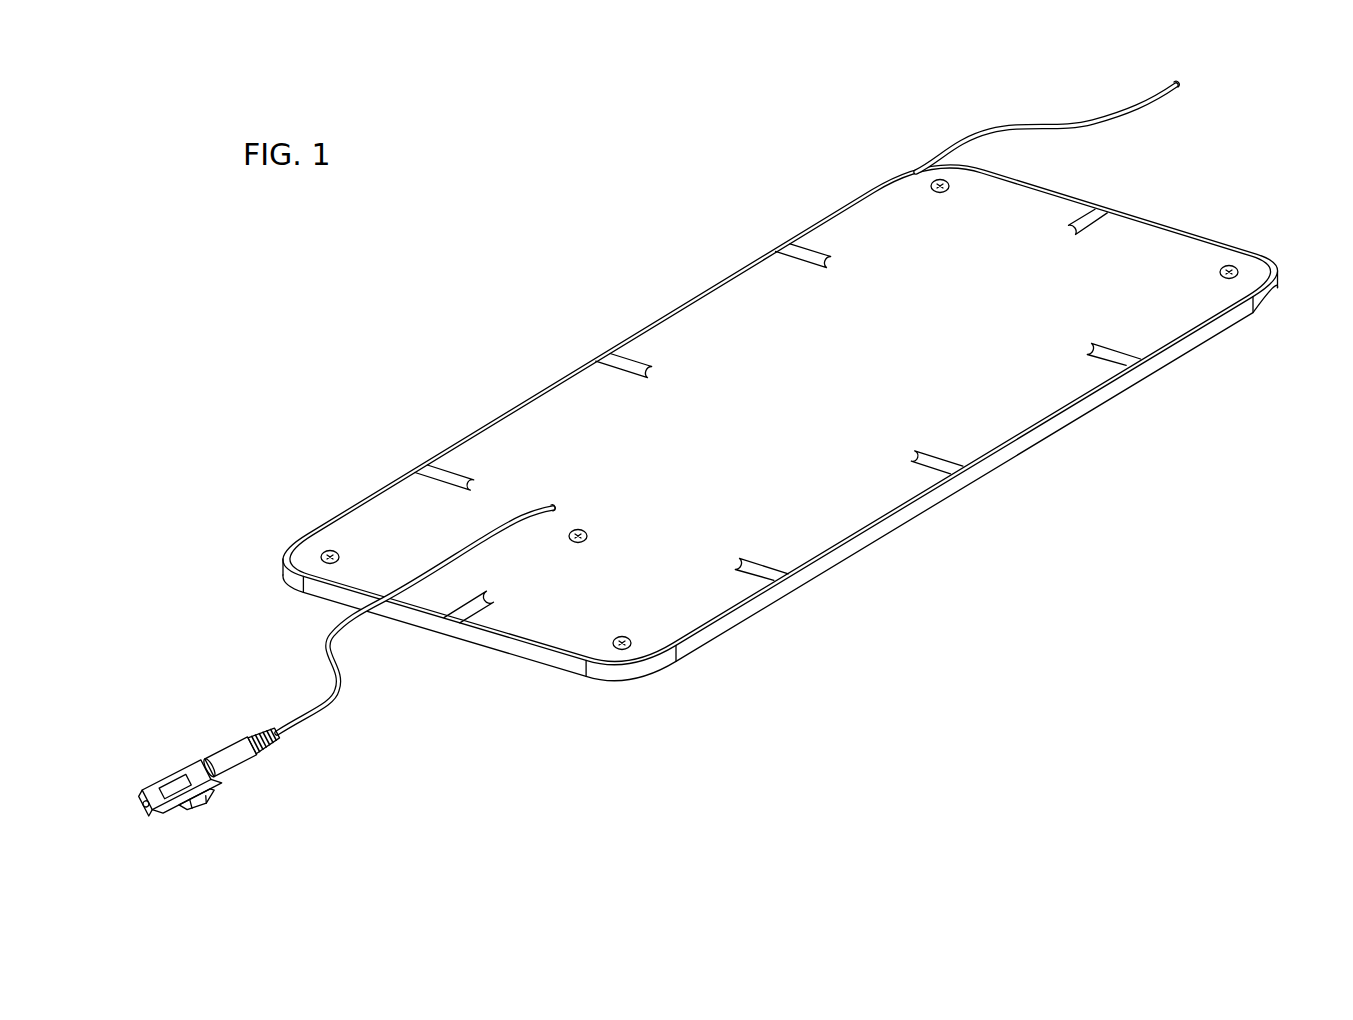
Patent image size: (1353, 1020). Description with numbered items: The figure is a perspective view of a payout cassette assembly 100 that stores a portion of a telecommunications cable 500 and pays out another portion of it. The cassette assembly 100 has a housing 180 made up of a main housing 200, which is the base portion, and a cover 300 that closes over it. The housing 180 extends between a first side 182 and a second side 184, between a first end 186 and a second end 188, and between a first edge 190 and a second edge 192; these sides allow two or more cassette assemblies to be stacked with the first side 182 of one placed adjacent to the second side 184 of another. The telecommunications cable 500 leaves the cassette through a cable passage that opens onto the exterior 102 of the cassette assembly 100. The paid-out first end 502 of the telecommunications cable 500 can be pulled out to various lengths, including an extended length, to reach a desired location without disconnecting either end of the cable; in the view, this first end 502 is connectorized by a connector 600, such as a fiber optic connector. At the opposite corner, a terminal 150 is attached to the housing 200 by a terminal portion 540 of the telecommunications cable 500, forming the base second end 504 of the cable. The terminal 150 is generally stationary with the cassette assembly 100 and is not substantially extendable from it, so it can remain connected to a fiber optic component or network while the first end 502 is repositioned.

The cassette assembly 100 is at (470, 257).
The exterior 102 is at (625, 675).
The terminal 150 is at (1170, 85).
The housing 180 is at (473, 427).
The first side 182 is at (747, 288).
The second side 184 is at (928, 513).
The first end 186 is at (518, 650).
The second end 188 is at (1083, 203).
The first edge 190 is at (830, 562).
The second edge 192 is at (663, 313).
The main housing 200 is at (1008, 467).
The cover 300 is at (1162, 247).
The telecommunications cable 500 is at (320, 705).
The first end 502 is at (243, 745).
The second end 504 is at (1179, 89).
The terminal portion 540 is at (1028, 130).
The connector 600 is at (173, 767).